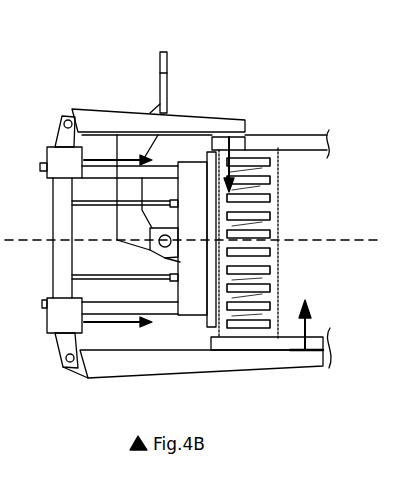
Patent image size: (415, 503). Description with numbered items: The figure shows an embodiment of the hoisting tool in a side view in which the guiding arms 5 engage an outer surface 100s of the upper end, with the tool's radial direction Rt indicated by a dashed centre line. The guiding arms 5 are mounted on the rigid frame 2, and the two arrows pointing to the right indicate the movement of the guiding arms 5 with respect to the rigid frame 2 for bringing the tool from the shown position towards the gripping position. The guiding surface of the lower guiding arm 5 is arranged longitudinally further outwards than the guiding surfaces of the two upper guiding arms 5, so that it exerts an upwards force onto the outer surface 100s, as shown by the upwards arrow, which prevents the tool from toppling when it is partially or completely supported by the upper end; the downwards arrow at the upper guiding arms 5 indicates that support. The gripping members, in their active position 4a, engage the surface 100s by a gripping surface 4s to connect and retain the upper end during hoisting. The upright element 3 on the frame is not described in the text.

The rigid frame 2 is at (195, 300).
The post 3 is at (170, 84).
The guiding arm 5 is at (193, 127).
The outer surface of the upper end 100s is at (235, 148).
The gripping surface 4s is at (257, 150).
The active position 4a is at (243, 224).
The radial direction Rt is at (378, 243).